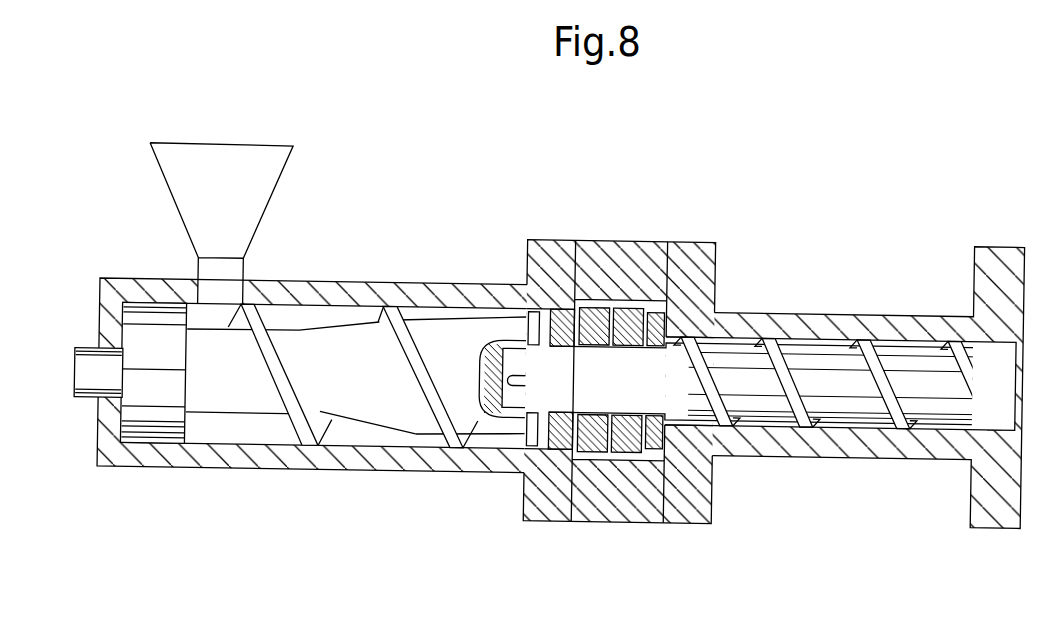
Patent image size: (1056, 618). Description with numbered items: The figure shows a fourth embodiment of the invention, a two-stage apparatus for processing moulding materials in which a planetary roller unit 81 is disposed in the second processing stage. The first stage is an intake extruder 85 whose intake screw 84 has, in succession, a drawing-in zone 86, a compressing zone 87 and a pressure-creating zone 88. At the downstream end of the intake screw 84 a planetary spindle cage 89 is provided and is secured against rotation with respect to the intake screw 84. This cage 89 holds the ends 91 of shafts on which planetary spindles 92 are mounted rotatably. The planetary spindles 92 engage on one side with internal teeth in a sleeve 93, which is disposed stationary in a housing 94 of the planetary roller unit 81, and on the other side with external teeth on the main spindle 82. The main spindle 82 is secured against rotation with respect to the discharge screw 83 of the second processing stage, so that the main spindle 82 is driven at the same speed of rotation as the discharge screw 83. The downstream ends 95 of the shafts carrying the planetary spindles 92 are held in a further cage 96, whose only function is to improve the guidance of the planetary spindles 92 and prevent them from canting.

The planetary roller unit 81 is at (619, 176).
The main spindle 82 is at (690, 373).
The discharge screw 83 is at (872, 410).
The intake screw 84 is at (416, 431).
The intake extruder 85 is at (396, 228).
The drawing-in zone 86 is at (254, 398).
The compressing zone 87 is at (355, 403).
The pressure-creating zone 88 is at (480, 414).
The planetary spindle cage 89 is at (555, 393).
The ends of shafts 91 is at (567, 423).
The planetary spindles 92 is at (591, 437).
The sleeve 93 is at (631, 437).
The housing 94 is at (635, 240).
The downstream ends of the shafts 95 is at (674, 306).
The cage 96 is at (669, 313).